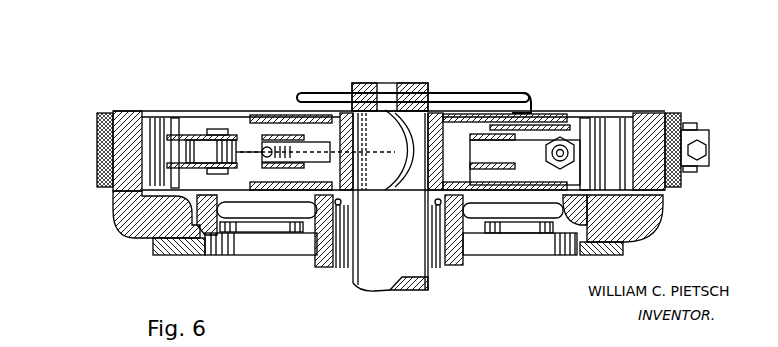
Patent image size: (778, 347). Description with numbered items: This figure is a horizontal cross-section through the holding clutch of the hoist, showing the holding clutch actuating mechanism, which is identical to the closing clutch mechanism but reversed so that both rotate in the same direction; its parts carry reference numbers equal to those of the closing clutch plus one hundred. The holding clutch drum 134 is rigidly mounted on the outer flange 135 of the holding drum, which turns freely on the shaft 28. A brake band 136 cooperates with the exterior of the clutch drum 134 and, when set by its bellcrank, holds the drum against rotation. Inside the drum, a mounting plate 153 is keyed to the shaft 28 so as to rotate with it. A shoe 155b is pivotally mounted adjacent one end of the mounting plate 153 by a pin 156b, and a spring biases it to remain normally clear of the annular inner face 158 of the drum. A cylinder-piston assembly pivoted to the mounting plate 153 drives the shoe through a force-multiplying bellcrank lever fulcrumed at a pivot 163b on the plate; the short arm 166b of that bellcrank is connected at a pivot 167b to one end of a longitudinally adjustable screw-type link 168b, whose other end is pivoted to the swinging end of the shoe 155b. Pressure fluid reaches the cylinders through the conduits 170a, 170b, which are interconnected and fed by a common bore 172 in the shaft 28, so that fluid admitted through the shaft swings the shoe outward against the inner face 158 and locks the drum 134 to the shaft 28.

The shaft 28 is at (374, 270).
The holding clutch drum 134 is at (127, 122).
The outer flange 135 is at (170, 250).
The brake band 136 is at (105, 120).
The mounting plate 153 is at (198, 137).
The shoe 155b is at (242, 128).
The pin 156b is at (222, 133).
The annular inner face 158 is at (175, 118).
The pivot 163b is at (515, 137).
The short arm 166b is at (542, 135).
The pivot 167b is at (566, 145).
The screw-type link 168b is at (578, 152).
The conduit 170a is at (520, 100).
The conduit 170b is at (318, 100).
The bore 172 is at (387, 100).